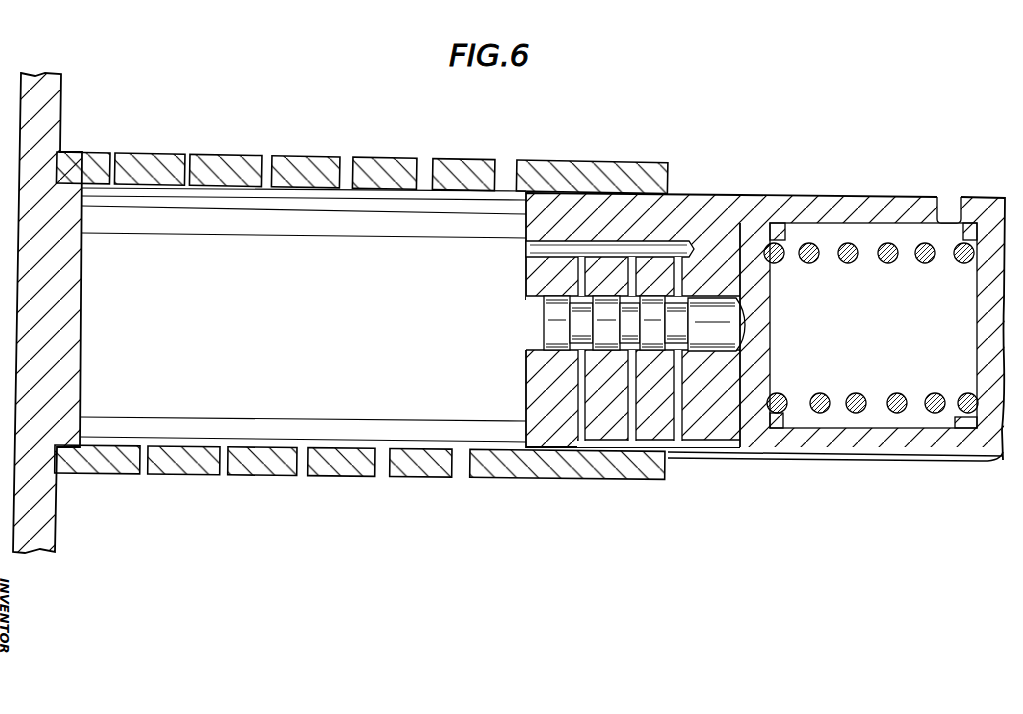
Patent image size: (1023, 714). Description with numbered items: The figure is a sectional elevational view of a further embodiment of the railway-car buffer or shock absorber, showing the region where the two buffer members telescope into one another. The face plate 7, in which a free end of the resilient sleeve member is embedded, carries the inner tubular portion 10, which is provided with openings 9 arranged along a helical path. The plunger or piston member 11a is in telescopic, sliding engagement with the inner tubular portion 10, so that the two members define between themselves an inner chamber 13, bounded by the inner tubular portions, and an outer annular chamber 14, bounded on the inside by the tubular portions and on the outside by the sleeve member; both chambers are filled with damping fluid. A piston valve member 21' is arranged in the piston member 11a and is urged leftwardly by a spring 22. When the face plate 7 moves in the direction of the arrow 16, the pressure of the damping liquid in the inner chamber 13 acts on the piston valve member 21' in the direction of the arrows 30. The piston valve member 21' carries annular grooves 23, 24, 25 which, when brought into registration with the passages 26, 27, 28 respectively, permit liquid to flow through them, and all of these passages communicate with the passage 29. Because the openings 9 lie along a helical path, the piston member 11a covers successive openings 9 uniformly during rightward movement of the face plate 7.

The face plate 7 is at (70, 393).
The openings 9 is at (267, 160).
The inner tubular portion 10 is at (162, 463).
The piston member 11a is at (542, 387).
The inner chamber 13 is at (263, 402).
The outer annular chamber 14 is at (740, 186).
The arrow 16 is at (105, 123).
The piston valve member 21' is at (748, 324).
The spring 22 is at (932, 398).
The annular groove 23 is at (675, 348).
The annular groove 24 is at (628, 348).
The annular groove 25 is at (578, 350).
The passage 26 is at (676, 437).
The passage 27 is at (628, 437).
The passage 28 is at (579, 437).
The passage 29 is at (655, 252).
The arrows 30 is at (530, 335).